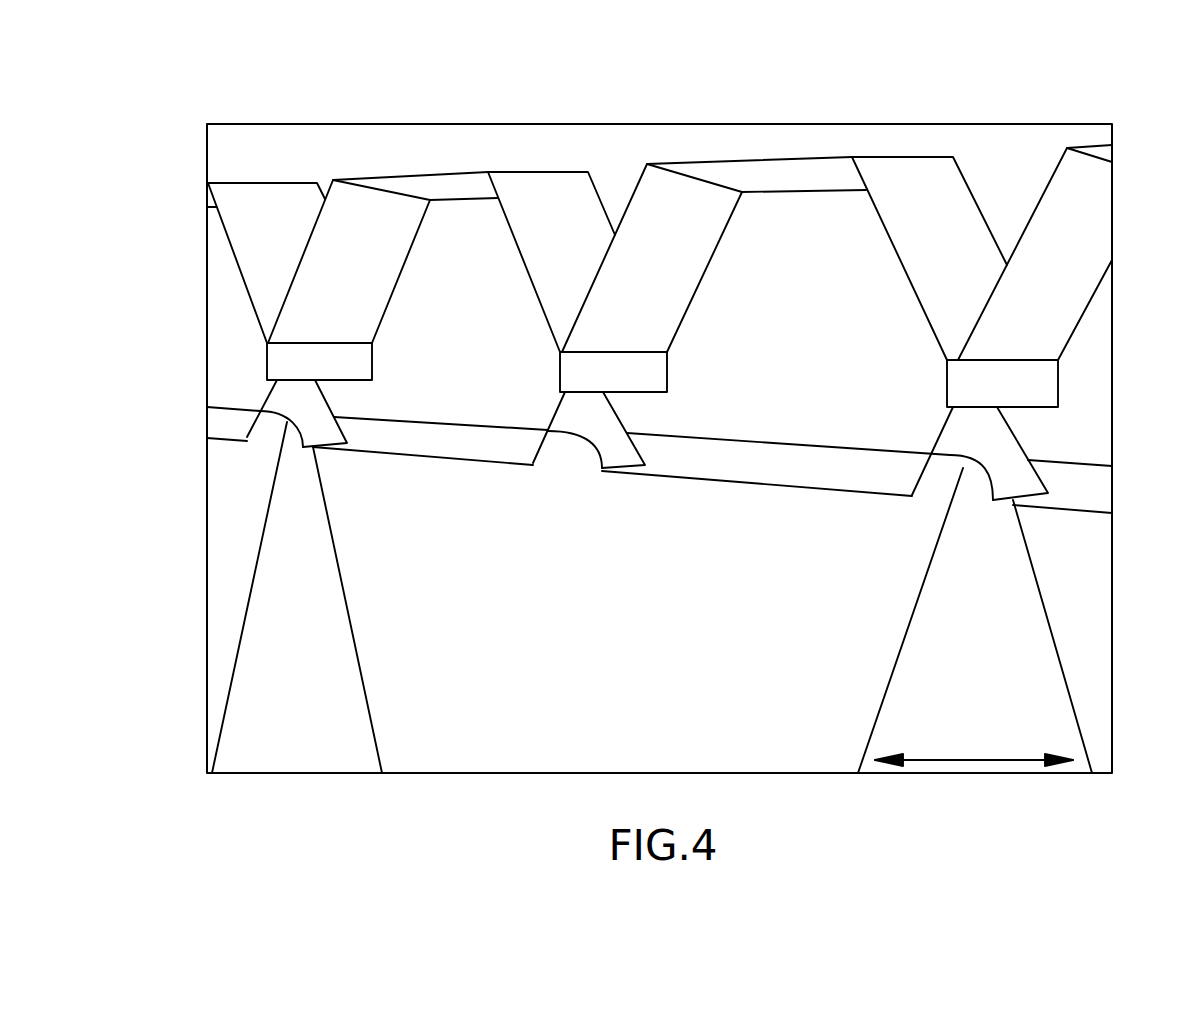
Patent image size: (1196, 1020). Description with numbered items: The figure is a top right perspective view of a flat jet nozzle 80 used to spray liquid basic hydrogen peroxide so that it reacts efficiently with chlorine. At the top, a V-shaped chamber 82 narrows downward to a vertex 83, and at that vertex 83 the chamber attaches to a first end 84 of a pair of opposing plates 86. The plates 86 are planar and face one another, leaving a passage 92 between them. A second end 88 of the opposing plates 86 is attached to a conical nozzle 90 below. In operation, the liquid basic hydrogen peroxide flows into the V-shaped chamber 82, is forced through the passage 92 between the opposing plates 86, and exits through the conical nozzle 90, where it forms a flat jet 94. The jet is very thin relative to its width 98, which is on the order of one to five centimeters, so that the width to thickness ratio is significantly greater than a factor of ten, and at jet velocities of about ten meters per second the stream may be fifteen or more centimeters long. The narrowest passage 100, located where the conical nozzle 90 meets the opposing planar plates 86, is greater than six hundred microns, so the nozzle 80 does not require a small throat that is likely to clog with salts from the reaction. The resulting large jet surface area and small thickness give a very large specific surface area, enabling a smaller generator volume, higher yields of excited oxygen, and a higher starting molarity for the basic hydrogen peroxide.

The flat jet nozzle 80 is at (624, 111).
The V-shaped chamber 82 is at (254, 237).
The vertex 83 is at (266, 311).
The first end 84 is at (560, 351).
The opposing plates 86 is at (301, 374).
The second end 88 is at (270, 389).
The conical nozzle 90 is at (273, 427).
The passage 92 is at (667, 372).
The flat jet 94 is at (279, 624).
The width 98 is at (982, 757).
The narrowest passage 100 is at (307, 381).